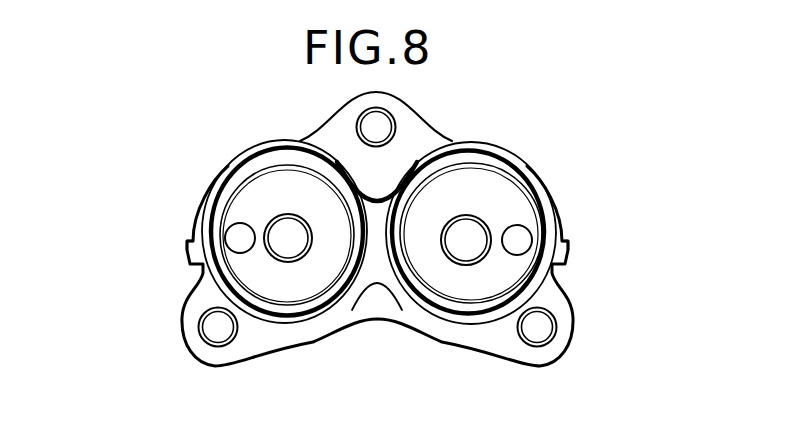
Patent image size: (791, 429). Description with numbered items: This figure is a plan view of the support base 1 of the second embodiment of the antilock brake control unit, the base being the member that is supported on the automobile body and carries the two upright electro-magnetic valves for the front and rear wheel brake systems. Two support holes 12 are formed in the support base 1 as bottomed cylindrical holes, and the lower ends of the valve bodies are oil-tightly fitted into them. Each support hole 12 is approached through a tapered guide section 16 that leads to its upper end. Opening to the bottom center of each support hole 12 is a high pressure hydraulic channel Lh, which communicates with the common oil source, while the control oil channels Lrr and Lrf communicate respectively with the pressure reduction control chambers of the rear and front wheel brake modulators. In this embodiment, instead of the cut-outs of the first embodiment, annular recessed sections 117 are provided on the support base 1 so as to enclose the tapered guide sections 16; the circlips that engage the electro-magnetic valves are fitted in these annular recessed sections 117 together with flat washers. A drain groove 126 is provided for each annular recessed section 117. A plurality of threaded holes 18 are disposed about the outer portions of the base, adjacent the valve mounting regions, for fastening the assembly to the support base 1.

The support base 1 is at (432, 137).
The support hole 12 is at (298, 306).
The tapered guide section 16 is at (343, 293).
The threaded hole 18 is at (384, 124).
The annular recessed section 117 is at (225, 183).
The drain groove 126 is at (188, 244).
The high pressure hydraulic channel Lh is at (288, 221).
The control oil channel Lrr is at (238, 230).
The control oil channel Lrf is at (512, 230).